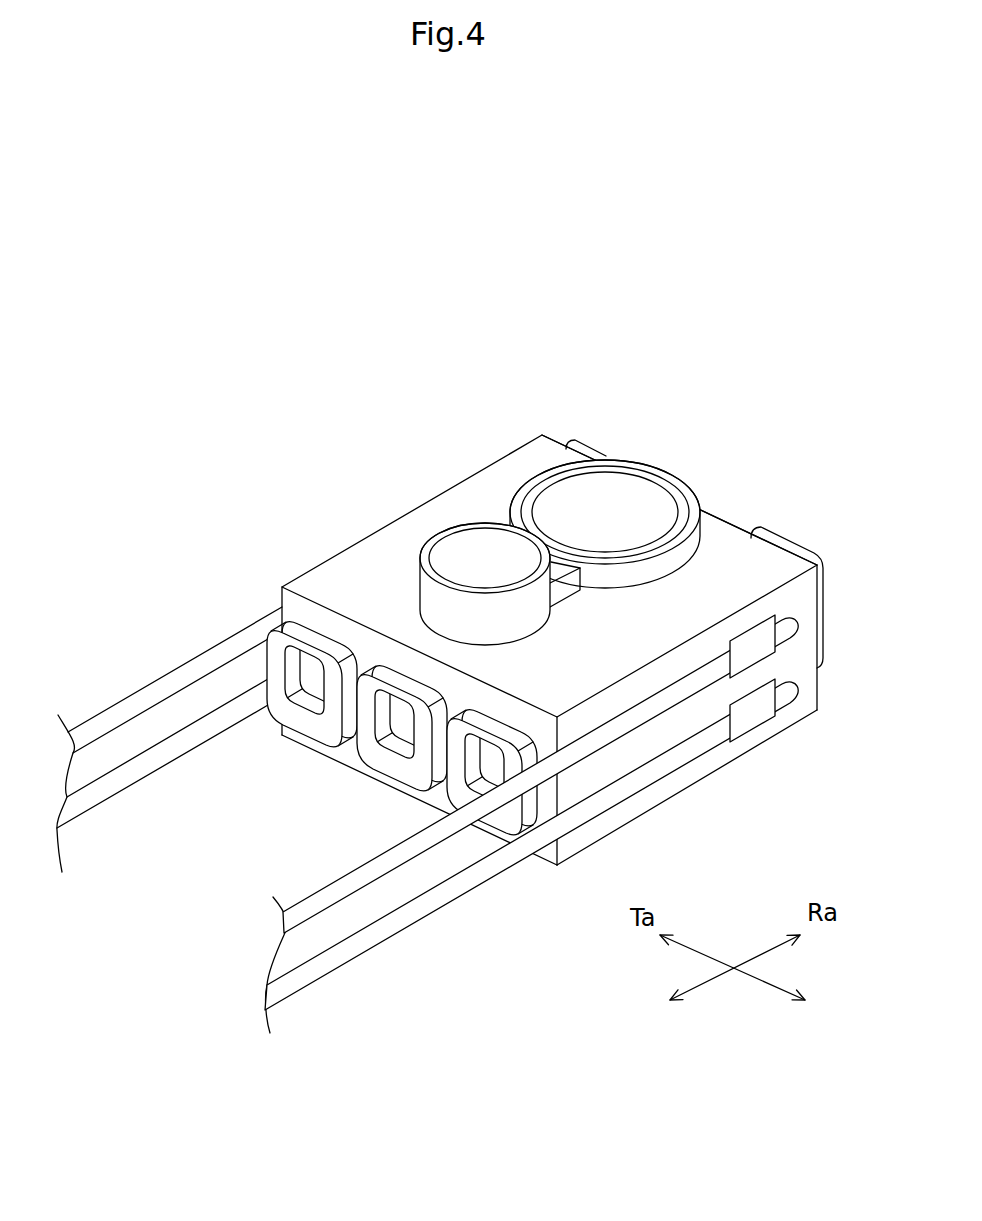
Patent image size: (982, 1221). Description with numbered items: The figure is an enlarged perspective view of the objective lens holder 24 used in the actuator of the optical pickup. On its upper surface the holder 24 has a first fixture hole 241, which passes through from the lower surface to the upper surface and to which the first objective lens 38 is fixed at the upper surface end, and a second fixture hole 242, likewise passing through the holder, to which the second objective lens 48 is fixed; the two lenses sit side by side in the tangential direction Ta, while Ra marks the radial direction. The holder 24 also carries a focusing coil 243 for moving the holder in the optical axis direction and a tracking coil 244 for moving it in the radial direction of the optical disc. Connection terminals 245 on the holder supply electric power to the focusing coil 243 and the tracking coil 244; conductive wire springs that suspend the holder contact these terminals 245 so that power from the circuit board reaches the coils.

The objective lens holder 24 is at (297, 578).
The first objective lens 38 is at (648, 505).
The second objective lens 48 is at (458, 560).
The first fixture hole 241 is at (547, 493).
The second fixture hole 242 is at (457, 535).
The focusing coil 243 is at (708, 507).
The tracking coil 244 is at (597, 448).
The connection terminals 245 is at (776, 652).